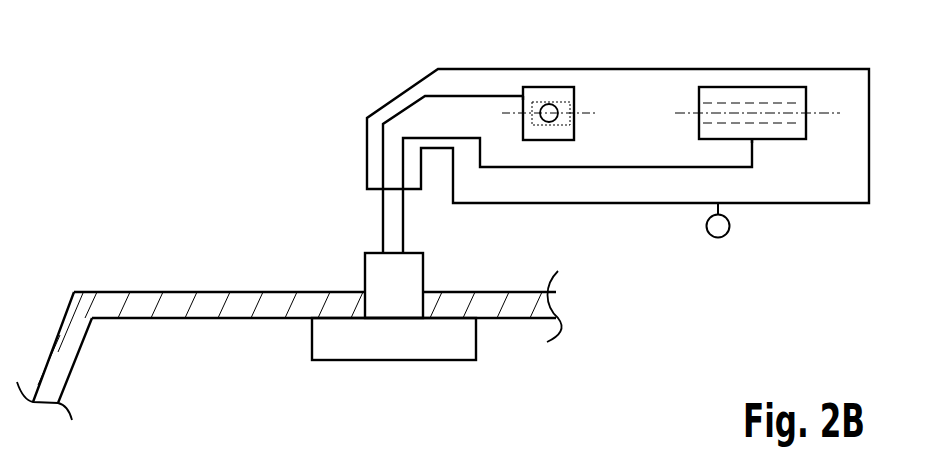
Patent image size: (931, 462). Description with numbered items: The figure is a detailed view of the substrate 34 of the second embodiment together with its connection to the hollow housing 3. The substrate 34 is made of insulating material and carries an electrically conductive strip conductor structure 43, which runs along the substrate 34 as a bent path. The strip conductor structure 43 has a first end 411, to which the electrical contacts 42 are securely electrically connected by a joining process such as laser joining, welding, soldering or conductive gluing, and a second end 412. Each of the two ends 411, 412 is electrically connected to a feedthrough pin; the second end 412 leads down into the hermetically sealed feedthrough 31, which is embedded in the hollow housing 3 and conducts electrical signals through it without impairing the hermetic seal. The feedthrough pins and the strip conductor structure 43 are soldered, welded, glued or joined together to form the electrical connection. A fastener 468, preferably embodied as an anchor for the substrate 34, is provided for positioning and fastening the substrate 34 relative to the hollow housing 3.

The hollow housing 3 is at (156, 386).
The hermetically sealed feedthrough 31 is at (393, 352).
The substrate 34 is at (841, 190).
The electrical contact 42 is at (548, 87).
The strip conductor structure 43 is at (450, 96).
The first end 411 is at (522, 89).
The second end 412 is at (407, 222).
The fastener 468 is at (729, 231).